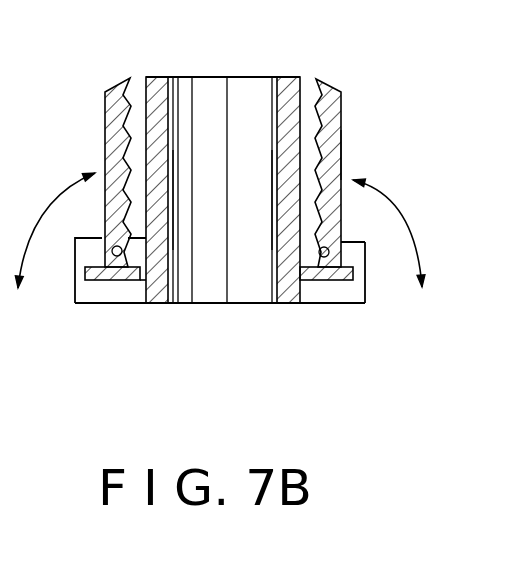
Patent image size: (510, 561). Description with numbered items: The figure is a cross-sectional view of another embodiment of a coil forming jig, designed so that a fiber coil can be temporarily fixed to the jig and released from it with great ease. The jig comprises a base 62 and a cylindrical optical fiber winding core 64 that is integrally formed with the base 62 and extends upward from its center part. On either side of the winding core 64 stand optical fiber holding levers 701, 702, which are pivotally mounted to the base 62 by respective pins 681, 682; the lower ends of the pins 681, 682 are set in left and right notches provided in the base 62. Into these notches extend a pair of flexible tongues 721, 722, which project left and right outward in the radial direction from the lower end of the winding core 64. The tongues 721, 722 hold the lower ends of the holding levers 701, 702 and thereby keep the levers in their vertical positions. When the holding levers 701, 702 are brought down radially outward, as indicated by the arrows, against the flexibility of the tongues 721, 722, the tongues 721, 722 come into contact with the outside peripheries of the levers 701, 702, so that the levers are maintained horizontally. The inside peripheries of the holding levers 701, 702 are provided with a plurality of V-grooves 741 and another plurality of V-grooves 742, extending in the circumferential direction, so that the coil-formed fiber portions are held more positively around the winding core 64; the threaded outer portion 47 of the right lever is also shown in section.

The cylindrical optical fiber winding core 64 is at (289, 80).
The optical fiber holding lever 701 is at (113, 107).
The optical fiber holding lever 702 is at (343, 95).
The threaded portion 47 is at (335, 161).
The base 62 is at (81, 257).
The pin 681 is at (113, 246).
The pin 682 is at (330, 253).
The flexible tongue 721 is at (113, 281).
The flexible tongue 722 is at (317, 281).
The V-grooves 741 is at (176, 240).
The V-grooves 742 is at (270, 240).